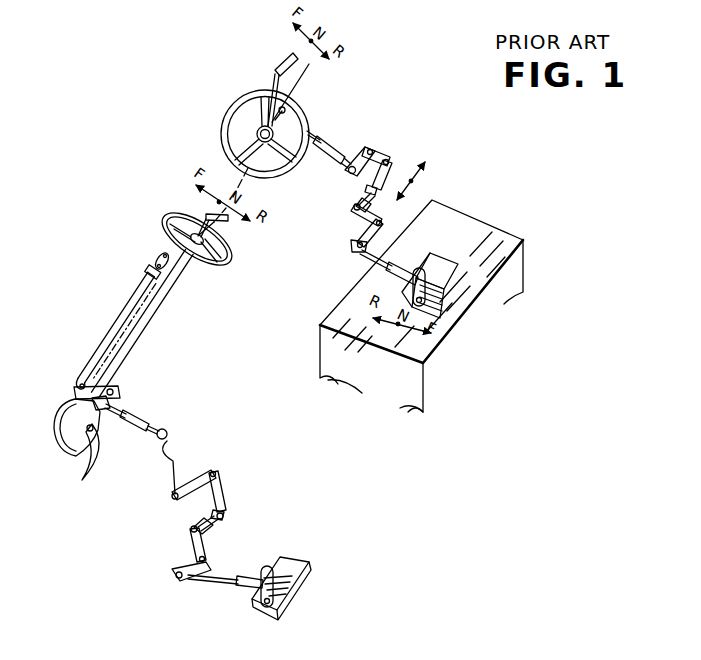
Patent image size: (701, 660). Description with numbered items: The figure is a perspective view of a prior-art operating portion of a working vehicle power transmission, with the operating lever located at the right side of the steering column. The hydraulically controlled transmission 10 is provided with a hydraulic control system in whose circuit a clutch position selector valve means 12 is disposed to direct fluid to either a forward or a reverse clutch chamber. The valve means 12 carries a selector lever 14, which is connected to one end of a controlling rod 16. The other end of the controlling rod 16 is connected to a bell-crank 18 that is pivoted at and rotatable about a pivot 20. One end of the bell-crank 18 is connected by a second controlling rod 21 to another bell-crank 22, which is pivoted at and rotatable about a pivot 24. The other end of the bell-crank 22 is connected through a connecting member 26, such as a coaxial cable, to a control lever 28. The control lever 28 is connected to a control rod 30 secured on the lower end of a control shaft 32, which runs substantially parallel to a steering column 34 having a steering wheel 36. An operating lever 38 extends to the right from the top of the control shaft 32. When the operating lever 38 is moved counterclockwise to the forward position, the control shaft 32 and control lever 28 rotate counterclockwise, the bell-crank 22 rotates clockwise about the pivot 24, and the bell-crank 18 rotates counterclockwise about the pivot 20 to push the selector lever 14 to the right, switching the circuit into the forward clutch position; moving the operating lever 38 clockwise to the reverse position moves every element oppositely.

The hydraulically controlled transmission 10 is at (476, 214).
The clutch position selector valve means 12 is at (458, 289).
The selector lever 14 is at (432, 291).
The controlling rod 16 is at (372, 262).
The bell-crank 18 is at (357, 241).
The pivot 20 is at (383, 222).
The second controlling rod 21 is at (378, 190).
The bell-crank 22 is at (386, 176).
The pivot 24 is at (368, 150).
The connecting member 26 is at (284, 112).
The control lever 28 is at (118, 392).
The control rod 30 is at (332, 159).
The control shaft 32 is at (103, 356).
The steering column 34 is at (158, 312).
The steering wheel 36 is at (232, 257).
The operating lever 38 is at (205, 214).